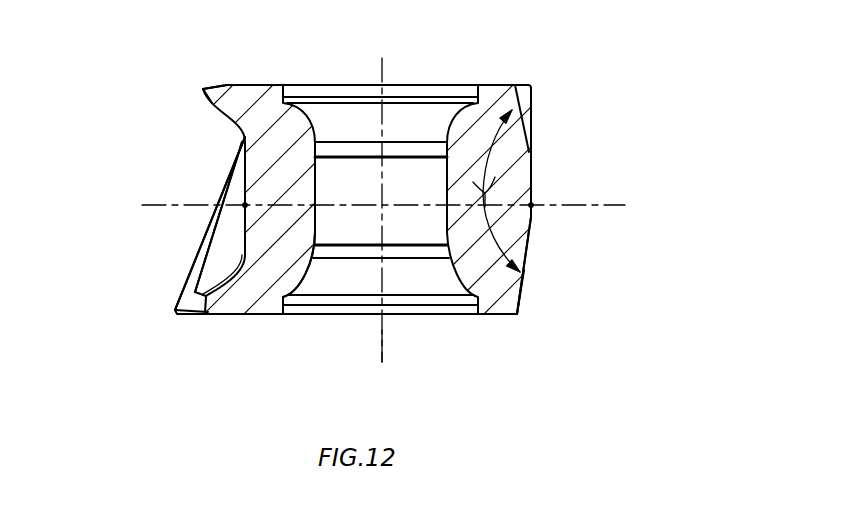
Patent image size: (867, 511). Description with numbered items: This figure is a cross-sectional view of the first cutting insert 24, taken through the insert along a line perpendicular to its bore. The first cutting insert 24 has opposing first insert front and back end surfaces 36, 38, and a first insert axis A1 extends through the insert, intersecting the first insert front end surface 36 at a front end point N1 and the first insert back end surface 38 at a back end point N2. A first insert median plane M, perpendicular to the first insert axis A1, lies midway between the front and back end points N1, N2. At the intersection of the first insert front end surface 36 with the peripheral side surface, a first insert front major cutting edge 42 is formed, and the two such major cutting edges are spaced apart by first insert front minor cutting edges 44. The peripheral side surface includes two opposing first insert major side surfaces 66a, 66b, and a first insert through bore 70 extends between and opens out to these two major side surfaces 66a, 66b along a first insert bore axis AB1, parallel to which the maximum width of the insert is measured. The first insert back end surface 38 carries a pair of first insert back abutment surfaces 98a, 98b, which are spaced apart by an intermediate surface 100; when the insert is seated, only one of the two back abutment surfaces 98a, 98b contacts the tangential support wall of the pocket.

The first cutting insert 24 is at (562, 255).
The first insert front major cutting edge 42 is at (203, 89).
The first insert major side surface 66a is at (432, 84).
The first insert back abutment surface 98a is at (532, 107).
The first insert back end surface 38 is at (533, 142).
The back end point N2 is at (532, 205).
The front end point N1 is at (245, 205).
The first insert axis A1 is at (382, 207).
The first insert bore axis AB1 is at (383, 196).
The first insert median plane M is at (378, 360).
The first insert front minor cutting edge 44 is at (207, 227).
The first insert front end surface 36 is at (213, 262).
The intermediate surface 100 is at (533, 221).
The first insert through bore 70 is at (343, 275).
The first insert major side surface 66b is at (440, 317).
The first insert back abutment surface 98b is at (523, 297).